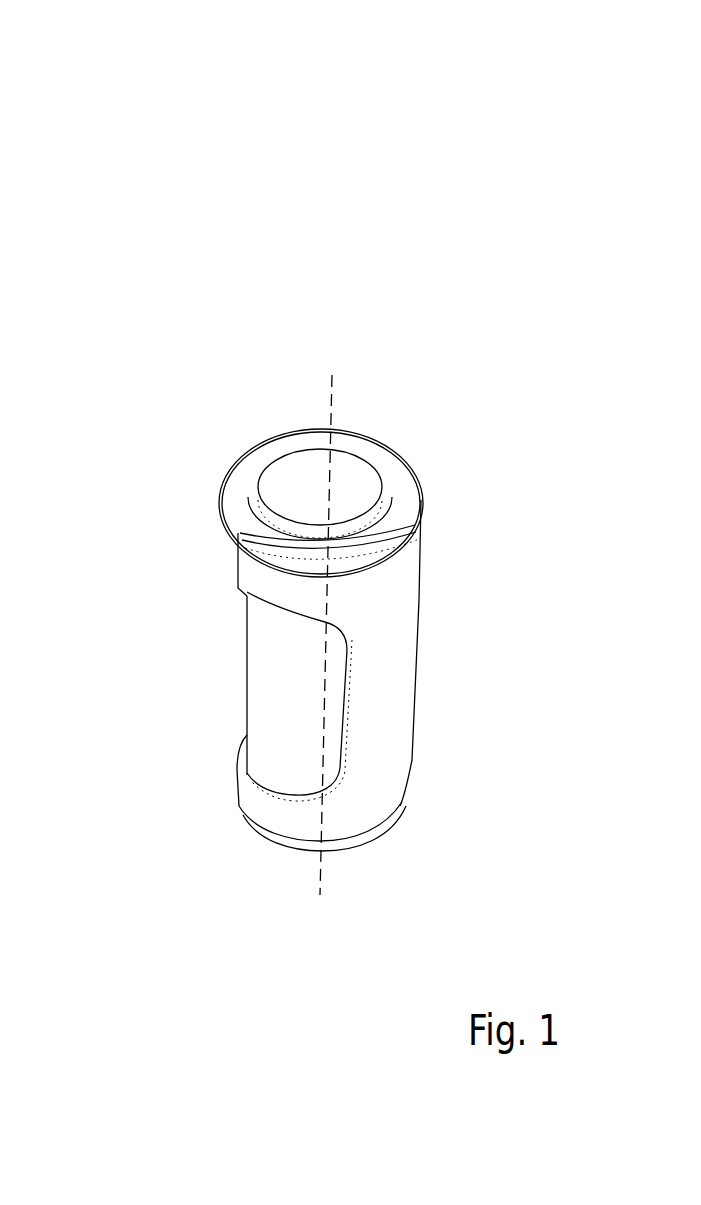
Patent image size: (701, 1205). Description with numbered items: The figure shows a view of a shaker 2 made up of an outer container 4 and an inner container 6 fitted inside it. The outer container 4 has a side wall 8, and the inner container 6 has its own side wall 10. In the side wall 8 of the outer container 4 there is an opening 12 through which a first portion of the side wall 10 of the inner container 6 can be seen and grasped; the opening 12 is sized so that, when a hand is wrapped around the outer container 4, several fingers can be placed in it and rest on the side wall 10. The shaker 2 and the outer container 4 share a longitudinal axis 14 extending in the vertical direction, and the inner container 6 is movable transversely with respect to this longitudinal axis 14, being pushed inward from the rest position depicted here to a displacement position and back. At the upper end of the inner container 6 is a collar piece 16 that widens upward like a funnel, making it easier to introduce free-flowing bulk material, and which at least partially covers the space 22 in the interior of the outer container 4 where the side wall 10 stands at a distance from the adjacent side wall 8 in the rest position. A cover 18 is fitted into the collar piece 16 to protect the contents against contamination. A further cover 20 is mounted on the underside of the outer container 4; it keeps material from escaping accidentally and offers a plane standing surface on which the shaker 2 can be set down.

The shaker 2 is at (230, 145).
The outer container 4 is at (282, 692).
The inner container 6 is at (245, 645).
The side wall 8 is at (393, 680).
The side wall 10 is at (290, 697).
The opening 12 is at (197, 722).
The longitudinal axis 14 is at (332, 380).
The collar piece 16 is at (242, 458).
The cover 18 is at (363, 478).
The cover 20 is at (370, 832).
The space 22 is at (423, 523).